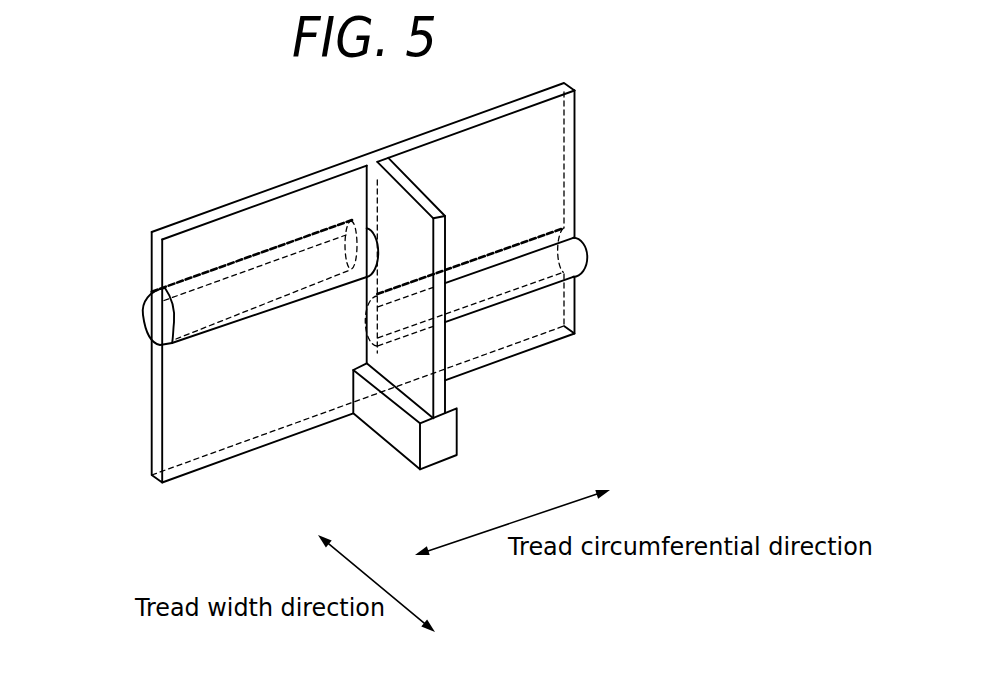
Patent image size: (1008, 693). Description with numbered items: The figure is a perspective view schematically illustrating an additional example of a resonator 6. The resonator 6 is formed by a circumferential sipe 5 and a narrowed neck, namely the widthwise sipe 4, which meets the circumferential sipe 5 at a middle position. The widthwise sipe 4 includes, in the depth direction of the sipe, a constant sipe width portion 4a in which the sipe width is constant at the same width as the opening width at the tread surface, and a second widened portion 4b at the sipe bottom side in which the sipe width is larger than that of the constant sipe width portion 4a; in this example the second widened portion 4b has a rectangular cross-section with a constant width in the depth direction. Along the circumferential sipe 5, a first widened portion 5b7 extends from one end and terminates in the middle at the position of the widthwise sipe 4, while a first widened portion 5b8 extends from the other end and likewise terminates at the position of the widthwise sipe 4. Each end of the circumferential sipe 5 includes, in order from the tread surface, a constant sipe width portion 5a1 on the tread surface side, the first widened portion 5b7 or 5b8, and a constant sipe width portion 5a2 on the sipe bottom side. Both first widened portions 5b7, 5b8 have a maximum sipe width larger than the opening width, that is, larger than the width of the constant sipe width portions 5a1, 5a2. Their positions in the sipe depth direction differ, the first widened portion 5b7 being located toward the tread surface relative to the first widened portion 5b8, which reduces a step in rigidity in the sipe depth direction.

The narrowed neck (widthwise sipe) 4 is at (449, 314).
The constant sipe width portion 4a is at (437, 347).
The second widened portion 4b is at (511, 383).
The circumferential sipe 5 is at (359, 283).
The constant sipe width portion 5a1 is at (160, 265).
The constant sipe width portion 5a2 is at (158, 430).
The first widened portion 5b7 is at (161, 322).
The first widened portion 5b8 is at (569, 253).
The resonator 6 is at (228, 158).